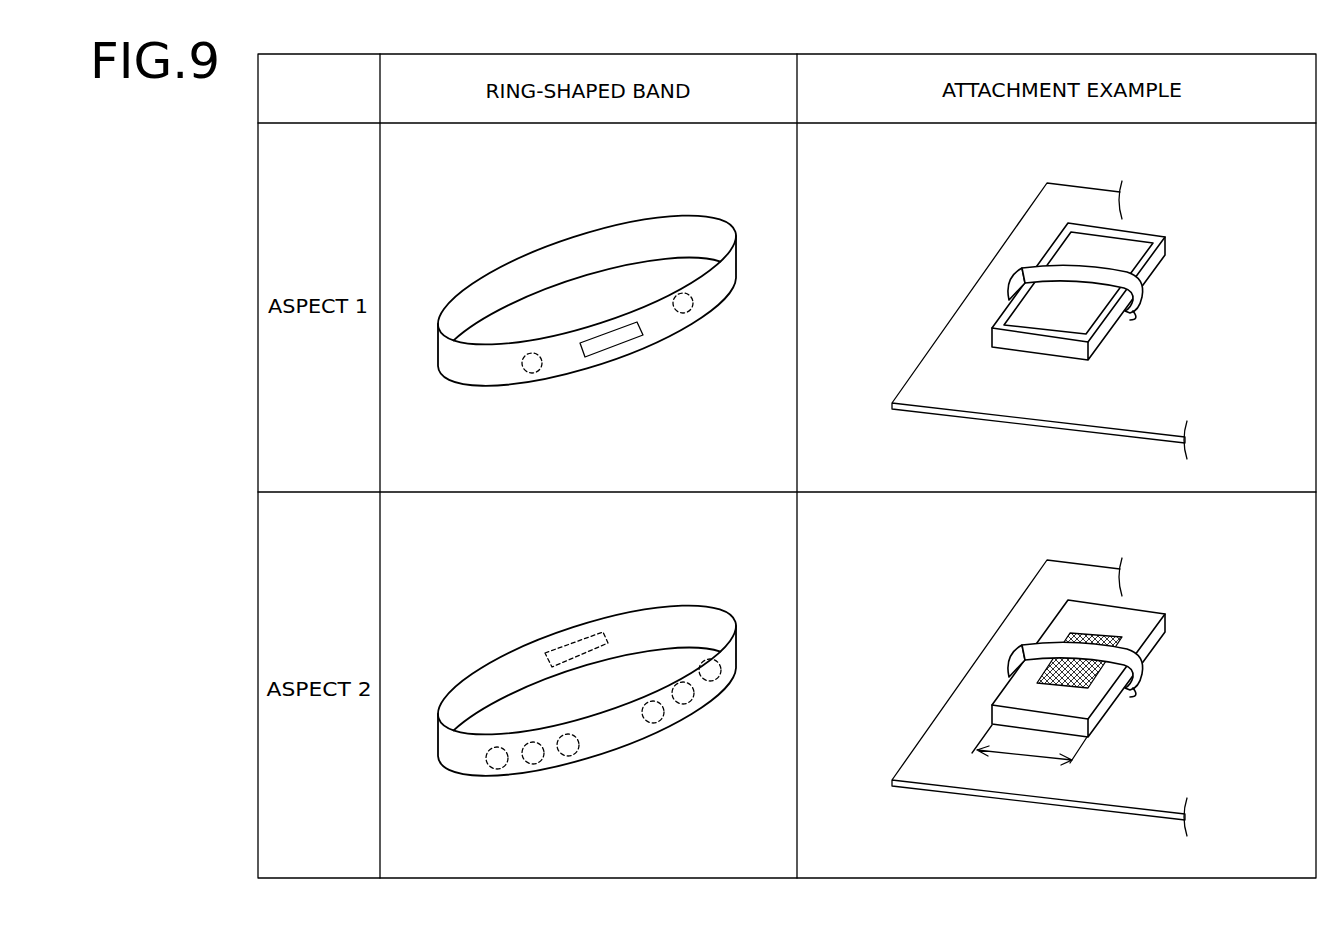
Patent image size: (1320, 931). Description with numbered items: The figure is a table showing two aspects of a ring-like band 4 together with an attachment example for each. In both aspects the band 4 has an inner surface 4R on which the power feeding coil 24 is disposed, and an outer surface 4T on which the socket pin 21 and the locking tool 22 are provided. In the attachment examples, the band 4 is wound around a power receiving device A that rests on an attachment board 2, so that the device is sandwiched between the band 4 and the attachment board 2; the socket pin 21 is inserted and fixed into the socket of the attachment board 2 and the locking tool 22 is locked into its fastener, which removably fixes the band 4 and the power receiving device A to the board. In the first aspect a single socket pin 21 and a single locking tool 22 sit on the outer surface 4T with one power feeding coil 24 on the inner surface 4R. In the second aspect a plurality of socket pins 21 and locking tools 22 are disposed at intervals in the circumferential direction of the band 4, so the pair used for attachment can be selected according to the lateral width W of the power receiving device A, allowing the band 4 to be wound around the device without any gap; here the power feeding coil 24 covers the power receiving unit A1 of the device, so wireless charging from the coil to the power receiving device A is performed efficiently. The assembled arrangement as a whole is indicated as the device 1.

The electronic device 1 is at (1048, 448).
The attachment board 2 is at (933, 390).
The band 4 is at (804, 478).
The outer surface 4T is at (525, 272).
The inner surface 4R is at (562, 353).
The socket pin 21 is at (537, 373).
The locking tool 22 is at (692, 311).
The power feeding coil 24 is at (615, 349).
The power receiving device A is at (1081, 464).
The power receiving unit A1 is at (1089, 680).
The width of main body W is at (1029, 754).